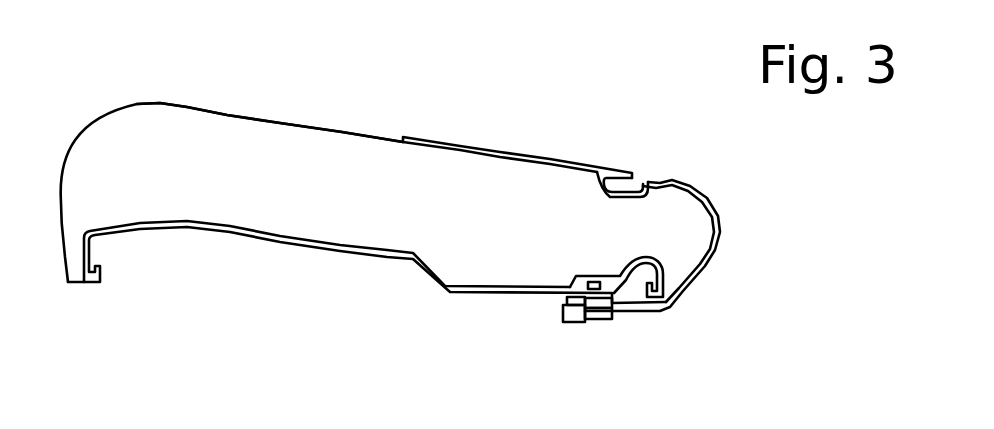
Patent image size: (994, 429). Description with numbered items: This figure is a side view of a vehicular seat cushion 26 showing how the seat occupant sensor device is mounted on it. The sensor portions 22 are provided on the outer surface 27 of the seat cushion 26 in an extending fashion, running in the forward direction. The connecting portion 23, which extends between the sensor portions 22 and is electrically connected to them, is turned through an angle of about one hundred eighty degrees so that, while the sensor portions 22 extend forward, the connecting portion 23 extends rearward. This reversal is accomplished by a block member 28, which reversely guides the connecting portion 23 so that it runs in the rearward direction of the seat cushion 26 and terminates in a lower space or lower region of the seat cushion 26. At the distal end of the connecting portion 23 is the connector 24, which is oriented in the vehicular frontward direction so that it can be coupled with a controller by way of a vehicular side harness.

The seat cushion 26 is at (273, 96).
The outer surface 27 is at (347, 133).
The sensor portion 22 is at (478, 147).
The block member 28 is at (647, 180).
The connecting portion 23 is at (722, 243).
The connector 24 is at (594, 322).